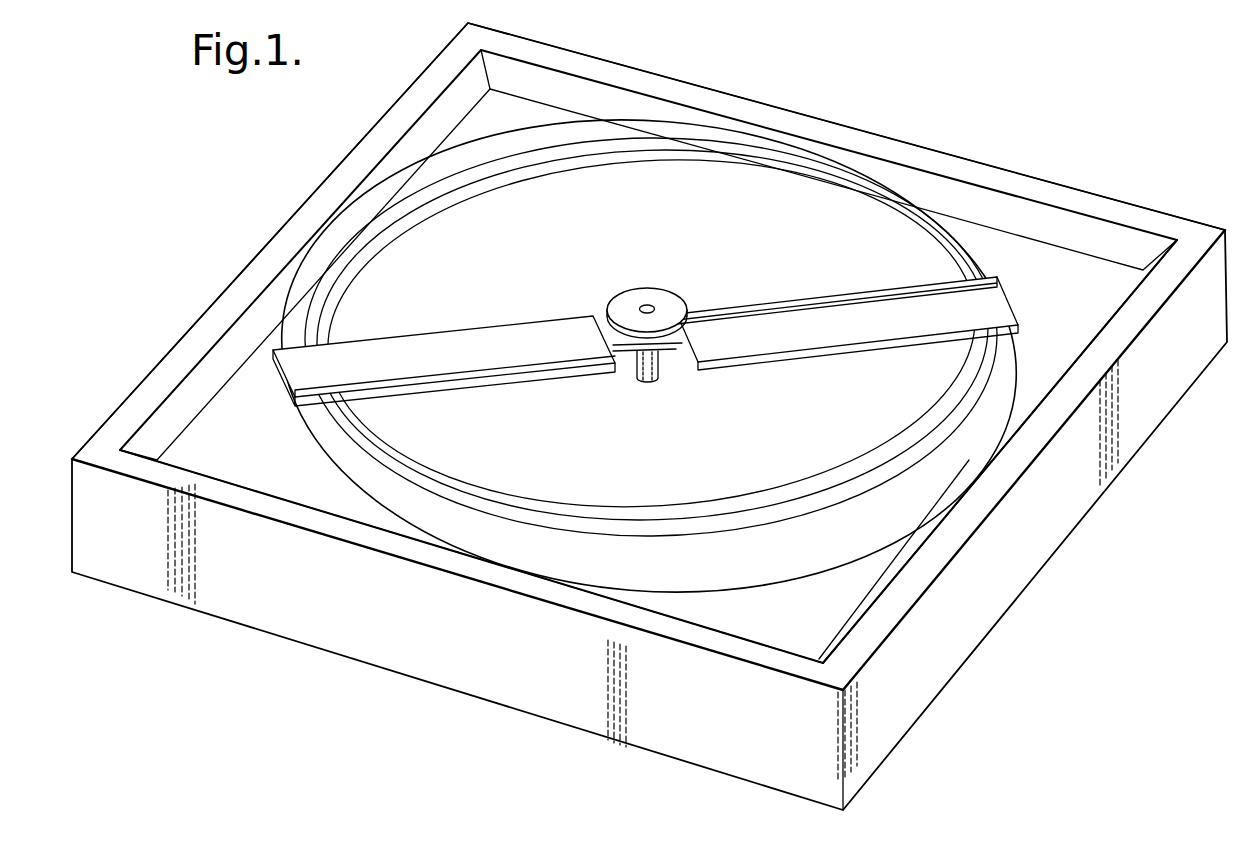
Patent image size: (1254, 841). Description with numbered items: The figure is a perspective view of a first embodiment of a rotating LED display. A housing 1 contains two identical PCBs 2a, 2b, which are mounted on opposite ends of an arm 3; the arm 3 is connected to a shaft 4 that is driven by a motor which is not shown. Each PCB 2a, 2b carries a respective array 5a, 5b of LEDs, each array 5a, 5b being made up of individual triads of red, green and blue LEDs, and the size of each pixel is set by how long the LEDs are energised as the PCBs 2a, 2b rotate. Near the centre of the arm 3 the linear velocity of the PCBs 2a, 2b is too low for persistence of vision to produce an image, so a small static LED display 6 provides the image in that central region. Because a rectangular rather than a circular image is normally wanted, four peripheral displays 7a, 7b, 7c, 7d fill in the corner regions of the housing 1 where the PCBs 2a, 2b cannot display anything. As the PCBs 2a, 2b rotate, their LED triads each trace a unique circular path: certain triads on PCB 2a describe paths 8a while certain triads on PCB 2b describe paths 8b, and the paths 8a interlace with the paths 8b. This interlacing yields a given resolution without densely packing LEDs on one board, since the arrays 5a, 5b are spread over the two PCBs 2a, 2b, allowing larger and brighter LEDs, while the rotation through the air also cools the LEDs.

The housing 1 is at (1065, 510).
The PCB 2a is at (490, 332).
The PCB 2b is at (792, 330).
The arm 3 is at (680, 348).
The shaft 4 is at (645, 377).
The array of LEDs 5a is at (462, 380).
The array of LEDs 5b is at (860, 293).
The static LED display 6 is at (667, 297).
The peripheral display 7a is at (762, 628).
The peripheral display 7b is at (220, 442).
The peripheral display 7c is at (480, 132).
The peripheral display 7d is at (1084, 268).
The paths 8a is at (710, 138).
The paths 8b is at (675, 507).